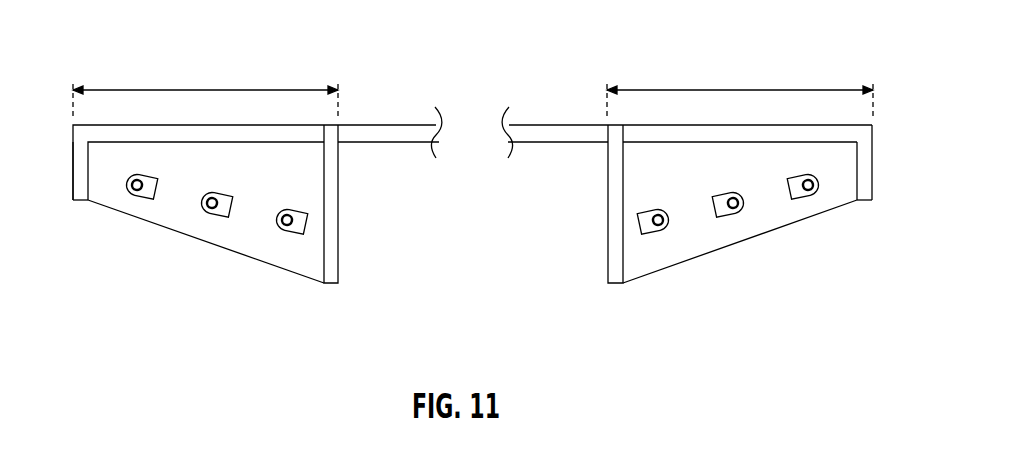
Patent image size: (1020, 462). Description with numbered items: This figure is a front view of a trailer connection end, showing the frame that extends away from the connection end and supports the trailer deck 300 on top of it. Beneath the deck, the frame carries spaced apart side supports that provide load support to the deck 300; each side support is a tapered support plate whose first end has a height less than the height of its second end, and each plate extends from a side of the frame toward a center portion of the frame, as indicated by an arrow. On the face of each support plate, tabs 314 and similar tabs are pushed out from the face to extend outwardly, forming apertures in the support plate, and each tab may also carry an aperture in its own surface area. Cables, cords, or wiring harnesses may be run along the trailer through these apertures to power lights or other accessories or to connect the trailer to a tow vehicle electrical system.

The trailer deck 300 is at (552, 97).
The mounting tab 314 is at (143, 198).